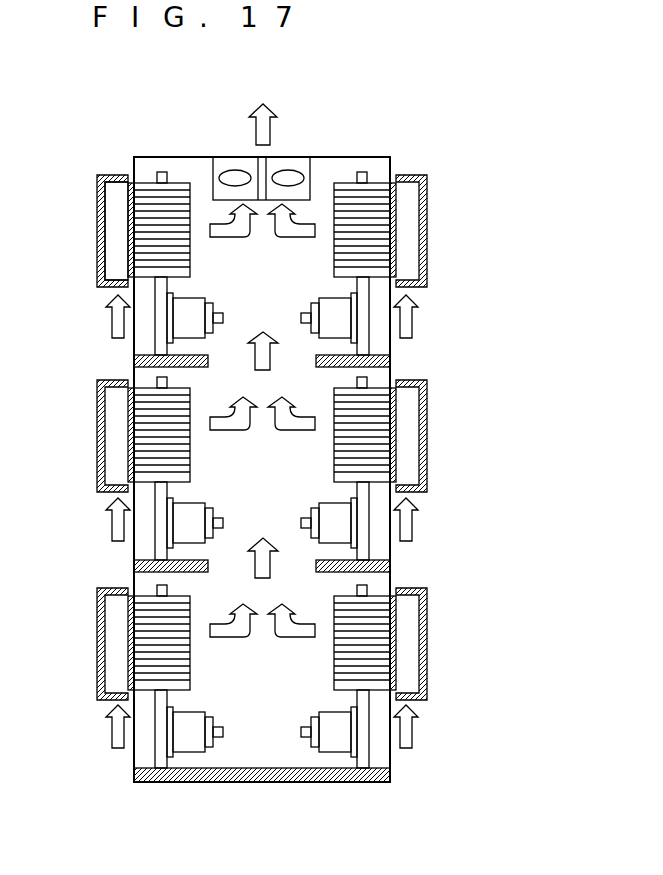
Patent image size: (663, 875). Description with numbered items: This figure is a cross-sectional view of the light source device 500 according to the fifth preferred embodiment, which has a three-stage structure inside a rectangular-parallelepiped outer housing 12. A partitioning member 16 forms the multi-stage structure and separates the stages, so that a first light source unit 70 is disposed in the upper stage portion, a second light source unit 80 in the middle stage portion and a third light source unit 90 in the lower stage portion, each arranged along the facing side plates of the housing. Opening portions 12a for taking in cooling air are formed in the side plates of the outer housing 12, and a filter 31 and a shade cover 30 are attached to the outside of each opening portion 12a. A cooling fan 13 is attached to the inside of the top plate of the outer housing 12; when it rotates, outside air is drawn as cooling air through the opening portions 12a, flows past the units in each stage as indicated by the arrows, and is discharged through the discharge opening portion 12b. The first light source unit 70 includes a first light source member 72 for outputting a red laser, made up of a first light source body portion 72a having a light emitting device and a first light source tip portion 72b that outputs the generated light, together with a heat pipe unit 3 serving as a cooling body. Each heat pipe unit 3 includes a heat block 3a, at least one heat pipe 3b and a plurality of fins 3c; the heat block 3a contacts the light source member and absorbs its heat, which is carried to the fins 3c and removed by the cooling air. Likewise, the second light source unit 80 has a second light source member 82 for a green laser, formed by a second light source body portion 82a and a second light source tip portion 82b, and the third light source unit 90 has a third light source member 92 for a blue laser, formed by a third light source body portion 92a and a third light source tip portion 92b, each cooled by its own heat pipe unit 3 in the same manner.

The outer housing 12 is at (191, 157).
The opening portion 12a is at (131, 262).
The discharge opening portion 12b is at (294, 157).
The cooling fan 13 is at (237, 176).
The light source device 500 is at (290, 144).
The first light source unit 70 is at (274, 237).
The shade cover 30 is at (100, 251).
The filter 31 is at (128, 211).
The heat pipe unit 3 is at (316, 254).
The heat block 3a is at (305, 316).
The heat pipe 3b is at (363, 177).
The fins 3c is at (380, 212).
The first light source member 72 is at (337, 332).
The first light source body portion 72a is at (340, 313).
The first light source tip portion 72b is at (320, 320).
The partitioning member 16 is at (138, 361).
The second light source unit 80 is at (289, 489).
The second light source member 82 is at (343, 533).
The second light source body portion 82a is at (340, 518).
The second light source tip portion 82b is at (320, 525).
The third light source unit 90 is at (308, 714).
The third light source member 92 is at (343, 742).
The third light source body portion 92a is at (340, 726).
The third light source tip portion 92b is at (320, 733).